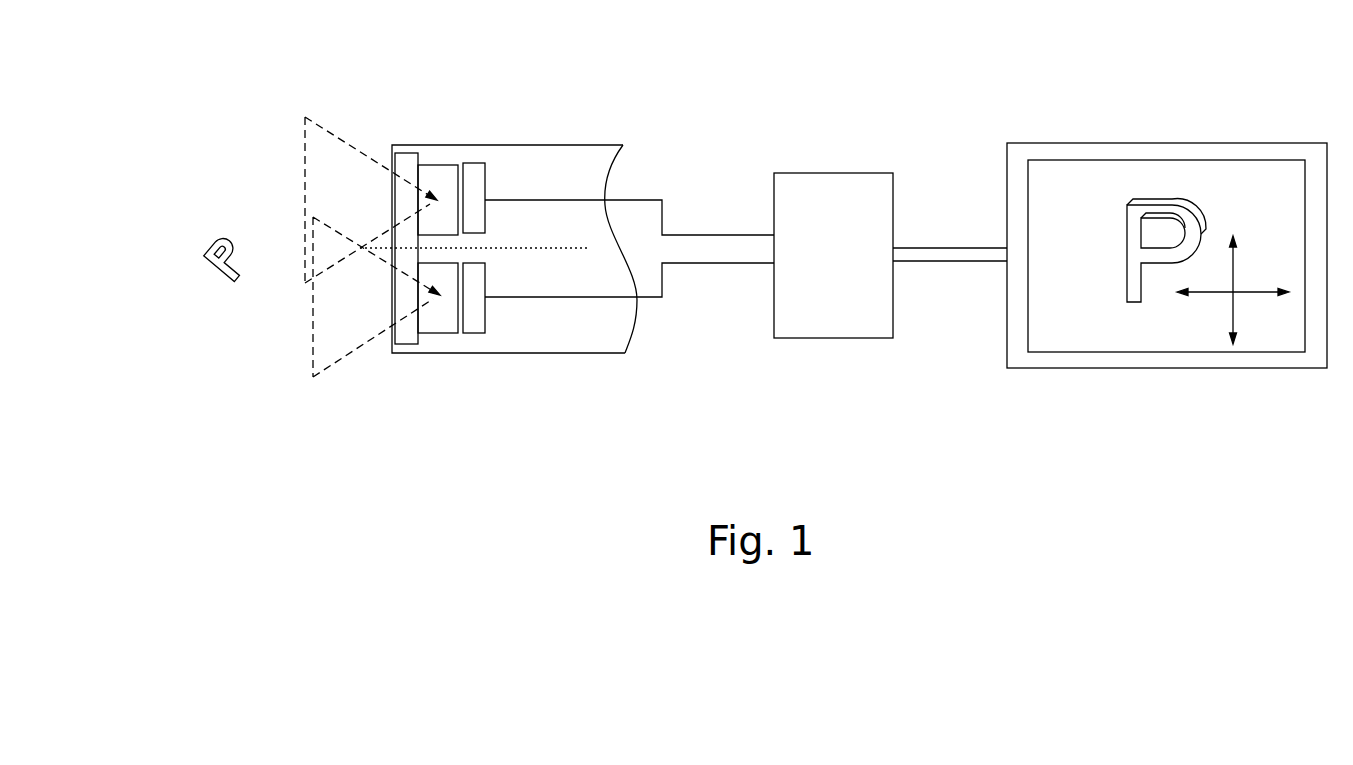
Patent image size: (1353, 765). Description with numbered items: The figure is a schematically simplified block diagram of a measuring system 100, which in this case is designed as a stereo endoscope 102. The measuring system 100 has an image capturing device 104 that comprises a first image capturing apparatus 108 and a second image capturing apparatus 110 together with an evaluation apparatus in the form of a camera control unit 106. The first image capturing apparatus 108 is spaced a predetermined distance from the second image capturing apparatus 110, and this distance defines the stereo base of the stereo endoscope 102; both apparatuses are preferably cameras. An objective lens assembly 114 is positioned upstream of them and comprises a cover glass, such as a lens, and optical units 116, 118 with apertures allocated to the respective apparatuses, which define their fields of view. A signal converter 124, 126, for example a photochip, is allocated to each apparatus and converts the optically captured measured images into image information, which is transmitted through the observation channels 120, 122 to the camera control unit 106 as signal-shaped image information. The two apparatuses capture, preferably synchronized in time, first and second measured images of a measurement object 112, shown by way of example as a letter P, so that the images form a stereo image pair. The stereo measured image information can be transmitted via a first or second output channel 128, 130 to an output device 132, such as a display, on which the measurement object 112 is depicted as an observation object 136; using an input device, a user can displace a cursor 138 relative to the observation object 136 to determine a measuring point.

The measuring system 100 is at (828, 342).
The stereo endoscope 102 is at (739, 384).
The image capturing device 104 is at (812, 125).
The camera control unit 106 is at (833, 255).
The first image capturing apparatus 108 is at (394, 359).
The second image capturing apparatus 110 is at (480, 247).
The measurement object 112 is at (205, 256).
The objective lens assembly 114 is at (405, 346).
The optical unit 116 is at (436, 163).
The optical unit 118 is at (445, 334).
The observation channel 120 is at (702, 233).
The observation channel 122 is at (680, 265).
The signal converter 124 is at (477, 162).
The signal converter 126 is at (486, 326).
The first output channel 128 is at (958, 246).
The second output channel 130 is at (930, 263).
The output device 132 is at (1167, 258).
The observation object 136 is at (1127, 238).
The cursor 138 is at (1245, 293).